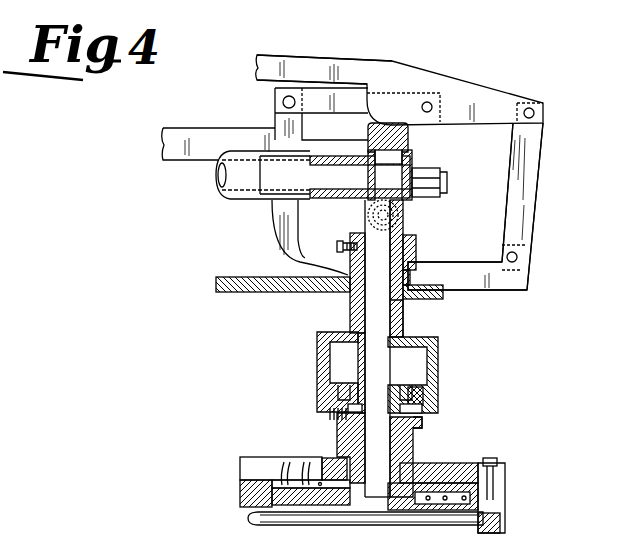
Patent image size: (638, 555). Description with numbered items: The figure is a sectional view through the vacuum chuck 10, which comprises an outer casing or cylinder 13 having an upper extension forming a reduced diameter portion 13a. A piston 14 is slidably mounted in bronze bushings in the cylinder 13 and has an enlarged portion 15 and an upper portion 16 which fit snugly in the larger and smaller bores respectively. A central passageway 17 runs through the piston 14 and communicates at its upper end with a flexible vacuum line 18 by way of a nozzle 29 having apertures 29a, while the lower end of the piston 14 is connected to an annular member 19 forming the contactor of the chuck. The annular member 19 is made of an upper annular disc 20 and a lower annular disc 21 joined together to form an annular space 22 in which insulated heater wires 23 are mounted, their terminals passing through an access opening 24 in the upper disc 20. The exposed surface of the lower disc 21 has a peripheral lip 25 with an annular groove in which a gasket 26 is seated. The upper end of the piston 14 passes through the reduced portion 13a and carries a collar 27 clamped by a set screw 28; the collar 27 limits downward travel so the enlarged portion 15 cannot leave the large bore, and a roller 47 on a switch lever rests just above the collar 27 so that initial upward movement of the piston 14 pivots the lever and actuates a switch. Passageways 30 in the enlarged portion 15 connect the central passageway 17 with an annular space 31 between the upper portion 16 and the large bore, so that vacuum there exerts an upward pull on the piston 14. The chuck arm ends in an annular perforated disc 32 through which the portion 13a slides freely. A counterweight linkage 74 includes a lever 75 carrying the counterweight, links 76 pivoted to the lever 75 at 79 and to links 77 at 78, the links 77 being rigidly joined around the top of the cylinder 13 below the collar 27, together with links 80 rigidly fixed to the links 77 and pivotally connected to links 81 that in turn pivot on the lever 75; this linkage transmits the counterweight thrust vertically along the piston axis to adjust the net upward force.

The vacuum chuck 10 is at (528, 370).
The outer casing or cylinder 13 is at (438, 362).
The reduced diameter portion 13a is at (405, 320).
The piston 14 is at (333, 441).
The enlarged piston portion 15 is at (423, 425).
The upper piston portion 16 is at (362, 312).
The central passageway 17 is at (392, 440).
The flexible vacuum line 18 is at (240, 200).
The annular member 19 is at (387, 489).
The upper annular disc 20 is at (505, 476).
The lower annular disc 21 is at (505, 518).
The annular space 22 is at (463, 504).
The heater wires 23 is at (285, 466).
The access opening 24 is at (240, 468).
The peripheral lip 25 is at (245, 511).
The gasket 26 is at (252, 520).
The collar 27 is at (416, 240).
The set screw 28 is at (340, 236).
The nozzle 29 is at (354, 199).
The apertures 29a is at (392, 163).
The passageways 30 is at (345, 412).
The annular space 31 is at (426, 369).
The annular perforated disc 32 is at (445, 293).
The roller 47 is at (397, 219).
The counterweight linkage 74 is at (553, 137).
The lever 75 is at (338, 67).
The links 76 is at (527, 214).
The links 77 is at (462, 273).
The pivot connection 78 is at (518, 257).
The pivot connection 79 is at (536, 112).
The links 80 is at (287, 245).
The links 81 is at (357, 112).